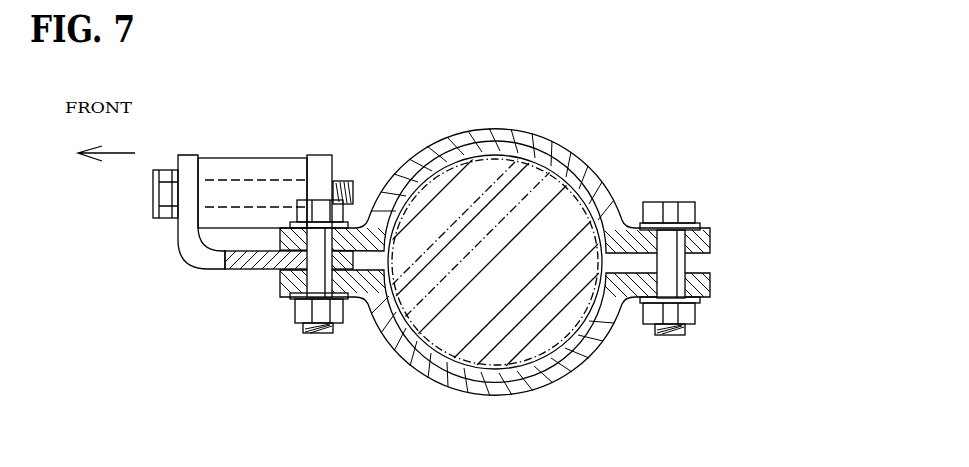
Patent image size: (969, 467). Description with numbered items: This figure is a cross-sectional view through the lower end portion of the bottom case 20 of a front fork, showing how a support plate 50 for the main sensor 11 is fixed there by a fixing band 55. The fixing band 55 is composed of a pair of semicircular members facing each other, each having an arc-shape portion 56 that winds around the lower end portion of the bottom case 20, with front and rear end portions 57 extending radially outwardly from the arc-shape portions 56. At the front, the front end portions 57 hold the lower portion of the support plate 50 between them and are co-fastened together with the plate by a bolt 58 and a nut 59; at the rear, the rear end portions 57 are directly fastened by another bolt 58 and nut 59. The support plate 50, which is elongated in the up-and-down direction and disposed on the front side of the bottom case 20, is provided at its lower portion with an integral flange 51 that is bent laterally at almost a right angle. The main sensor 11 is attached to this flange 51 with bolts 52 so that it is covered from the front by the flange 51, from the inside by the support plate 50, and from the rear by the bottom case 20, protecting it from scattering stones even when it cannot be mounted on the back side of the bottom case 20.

The main sensor 11 is at (251, 158).
The bottom case 20 is at (530, 322).
The support plate 50 is at (235, 272).
The flange 51 is at (186, 154).
The bolt 52 is at (153, 205).
The fixing band 55 is at (513, 255).
The arc-shape portion 56 is at (470, 127).
The end portion 57 is at (282, 244).
The bolt 58 is at (322, 172).
The nut 59 is at (340, 312).